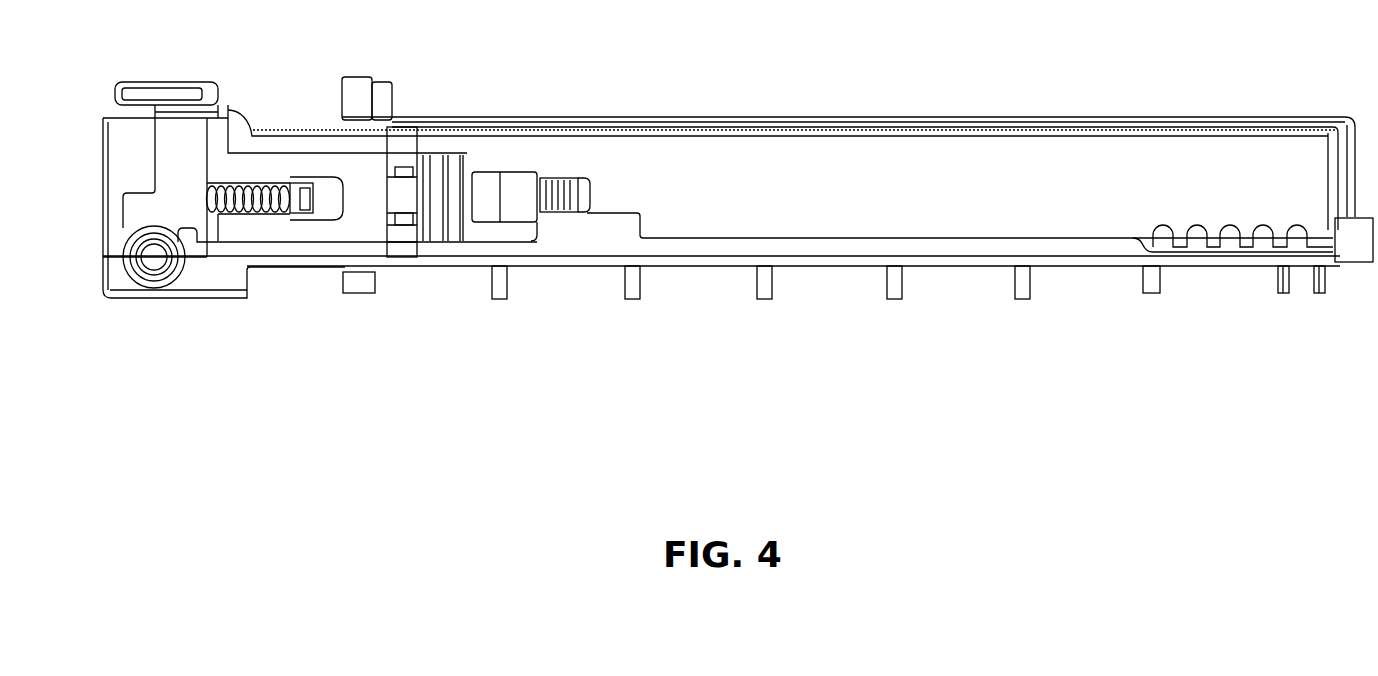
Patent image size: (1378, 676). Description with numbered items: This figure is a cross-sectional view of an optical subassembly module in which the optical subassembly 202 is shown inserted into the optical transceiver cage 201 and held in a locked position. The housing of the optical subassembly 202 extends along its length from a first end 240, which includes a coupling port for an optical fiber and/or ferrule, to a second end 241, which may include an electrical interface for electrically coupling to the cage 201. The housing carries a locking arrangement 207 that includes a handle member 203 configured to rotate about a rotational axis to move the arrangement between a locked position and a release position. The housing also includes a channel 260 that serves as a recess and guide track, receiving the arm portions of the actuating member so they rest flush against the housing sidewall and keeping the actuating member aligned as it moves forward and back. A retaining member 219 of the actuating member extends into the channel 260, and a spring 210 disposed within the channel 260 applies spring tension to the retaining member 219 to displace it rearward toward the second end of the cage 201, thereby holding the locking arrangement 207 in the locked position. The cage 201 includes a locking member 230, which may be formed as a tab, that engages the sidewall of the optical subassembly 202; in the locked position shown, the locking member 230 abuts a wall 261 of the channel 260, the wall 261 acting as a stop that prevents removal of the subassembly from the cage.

The optical transceiver cage 201 is at (565, 93).
The optical subassembly 202 is at (273, 97).
The handle member 203 is at (170, 83).
The locking arrangement 207 is at (205, 262).
The spring 210 is at (253, 212).
The retaining member 219 is at (297, 213).
The locking member 230 is at (530, 183).
The first end 240 is at (102, 310).
The second end 241 is at (1340, 288).
The channel 260 is at (482, 152).
The wall 261 is at (535, 227).